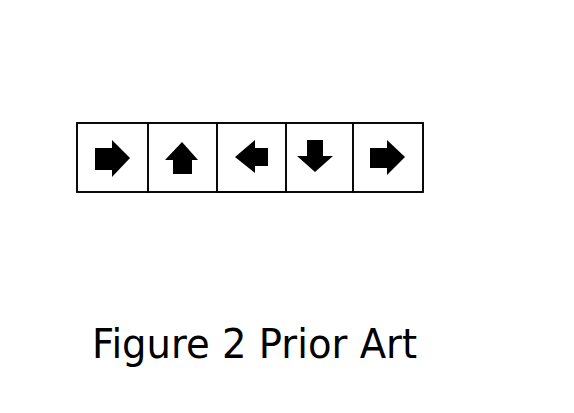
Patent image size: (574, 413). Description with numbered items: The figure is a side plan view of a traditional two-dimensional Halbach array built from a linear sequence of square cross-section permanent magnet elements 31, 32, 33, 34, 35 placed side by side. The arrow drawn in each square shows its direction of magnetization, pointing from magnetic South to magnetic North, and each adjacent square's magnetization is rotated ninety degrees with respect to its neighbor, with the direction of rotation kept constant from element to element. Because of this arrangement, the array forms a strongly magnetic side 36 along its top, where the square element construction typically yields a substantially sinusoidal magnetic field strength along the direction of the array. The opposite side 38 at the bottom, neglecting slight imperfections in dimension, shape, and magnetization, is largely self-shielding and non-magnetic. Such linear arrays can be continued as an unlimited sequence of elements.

The square permanent magnet element 31 is at (110, 182).
The square permanent magnet element 32 is at (177, 182).
The square permanent magnet element 33 is at (240, 182).
The square permanent magnet element 34 is at (328, 182).
The square permanent magnet element 35 is at (400, 182).
The strongly magnetic side 36 is at (247, 118).
The self-shielding non-magnetic side 38 is at (250, 204).